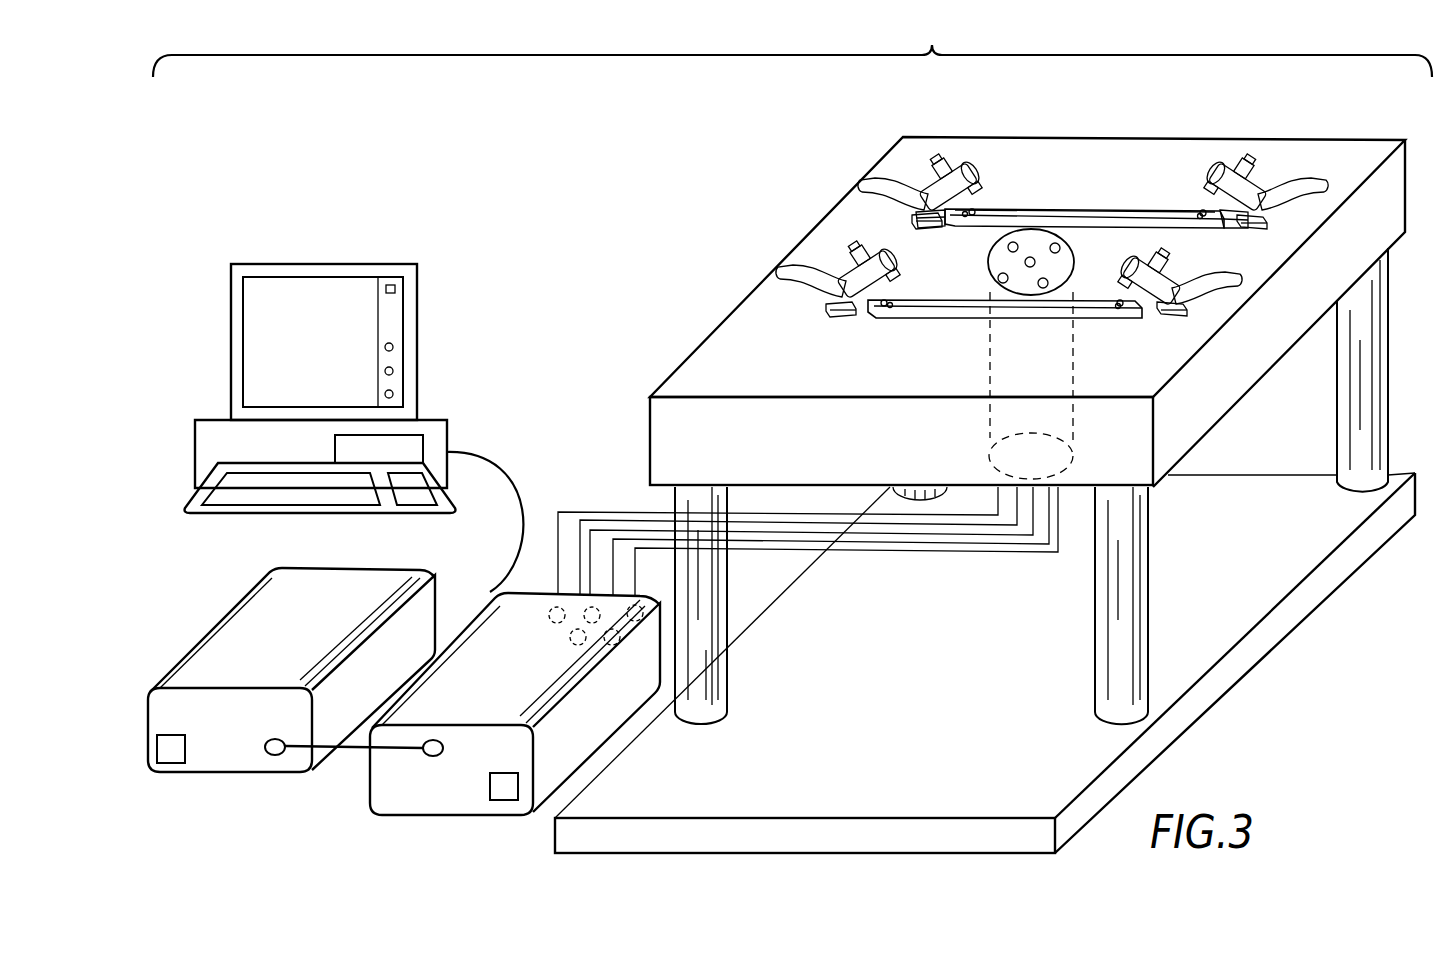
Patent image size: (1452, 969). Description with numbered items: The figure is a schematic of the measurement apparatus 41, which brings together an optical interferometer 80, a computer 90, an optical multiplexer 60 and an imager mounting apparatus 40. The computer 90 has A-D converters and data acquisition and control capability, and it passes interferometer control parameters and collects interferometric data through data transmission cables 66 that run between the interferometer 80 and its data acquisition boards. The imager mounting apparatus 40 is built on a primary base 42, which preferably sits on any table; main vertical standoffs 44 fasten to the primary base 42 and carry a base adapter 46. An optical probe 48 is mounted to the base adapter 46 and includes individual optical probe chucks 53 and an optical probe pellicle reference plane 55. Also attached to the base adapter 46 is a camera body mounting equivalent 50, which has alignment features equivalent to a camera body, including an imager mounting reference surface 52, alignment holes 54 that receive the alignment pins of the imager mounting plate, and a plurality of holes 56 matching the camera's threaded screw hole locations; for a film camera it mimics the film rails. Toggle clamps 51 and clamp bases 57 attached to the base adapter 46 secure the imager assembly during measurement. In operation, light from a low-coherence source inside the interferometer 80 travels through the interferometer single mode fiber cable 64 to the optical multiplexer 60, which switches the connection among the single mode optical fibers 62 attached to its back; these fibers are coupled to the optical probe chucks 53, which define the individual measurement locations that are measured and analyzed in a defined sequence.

The imager mounting apparatus 40 is at (812, 181).
The measurement apparatus 41 is at (792, 44).
The primary base 42 is at (1240, 672).
The main vertical standoffs 44 is at (1384, 420).
The base adapter 46 is at (1248, 352).
The optical probe 48 is at (988, 424).
The camera body mounting equivalent 50 is at (985, 227).
The toggle clamps 51 is at (927, 182).
The imager mounting reference surface 52 is at (1130, 208).
The optical probe chucks 53 is at (1033, 257).
The optical probe pellicle reference plane 55 is at (1071, 256).
The alignment holes 54 is at (946, 224).
The holes 56 is at (975, 212).
The clamp bases 57 is at (913, 220).
The optical multiplexer 60 is at (372, 767).
The single mode optical fibers 62 is at (793, 553).
The interferometer single mode fiber cable 64 is at (384, 760).
The data transmission cables 66 is at (511, 488).
The optical interferometer 80 is at (212, 630).
The computer 90 is at (220, 398).